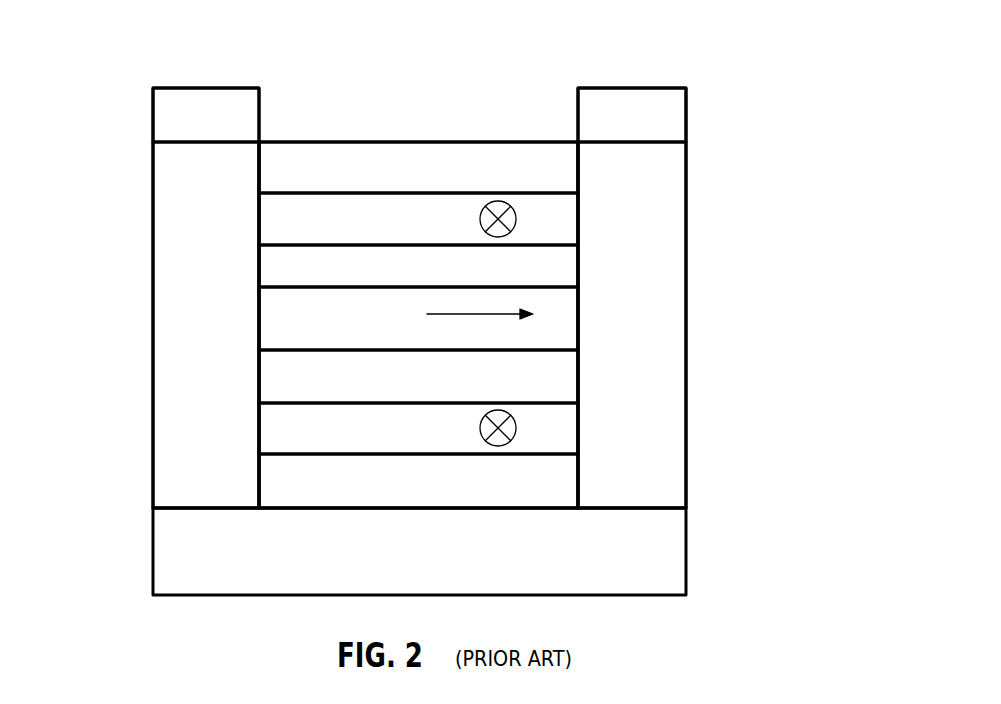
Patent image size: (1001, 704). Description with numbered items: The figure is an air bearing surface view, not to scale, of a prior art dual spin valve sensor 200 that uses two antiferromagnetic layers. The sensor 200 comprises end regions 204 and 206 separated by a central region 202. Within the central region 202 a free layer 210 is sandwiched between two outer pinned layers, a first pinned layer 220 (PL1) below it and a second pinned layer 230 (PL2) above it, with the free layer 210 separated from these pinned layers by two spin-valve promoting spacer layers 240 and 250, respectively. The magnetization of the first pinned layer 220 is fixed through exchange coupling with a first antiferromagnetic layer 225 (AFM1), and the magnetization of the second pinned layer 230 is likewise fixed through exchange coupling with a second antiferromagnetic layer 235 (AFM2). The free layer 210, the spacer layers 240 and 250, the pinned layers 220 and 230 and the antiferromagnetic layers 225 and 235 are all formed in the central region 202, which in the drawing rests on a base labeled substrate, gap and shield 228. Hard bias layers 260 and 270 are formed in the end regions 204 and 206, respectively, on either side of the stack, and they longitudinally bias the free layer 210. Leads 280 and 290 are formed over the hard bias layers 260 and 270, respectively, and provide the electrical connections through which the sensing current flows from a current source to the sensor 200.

The dual spin valve sensor 200 is at (103, 631).
The central region 202 is at (267, 80).
The end region 204 is at (152, 80).
The end region 206 is at (577, 80).
The free layer 210 is at (278, 325).
The first pinned layer 220 is at (278, 421).
The first antiferromagnetic layer 225 is at (278, 472).
The substrate, gap and shield 228 is at (672, 537).
The second pinned layer 230 is at (287, 215).
The second antiferromagnetic layer 235 is at (278, 158).
The spacer layer 240 is at (533, 366).
The spacer layer 250 is at (533, 261).
The hard bias layer 260 is at (168, 277).
The hard bias layer 270 is at (670, 170).
The lead 280 is at (168, 121).
The lead 290 is at (670, 117).